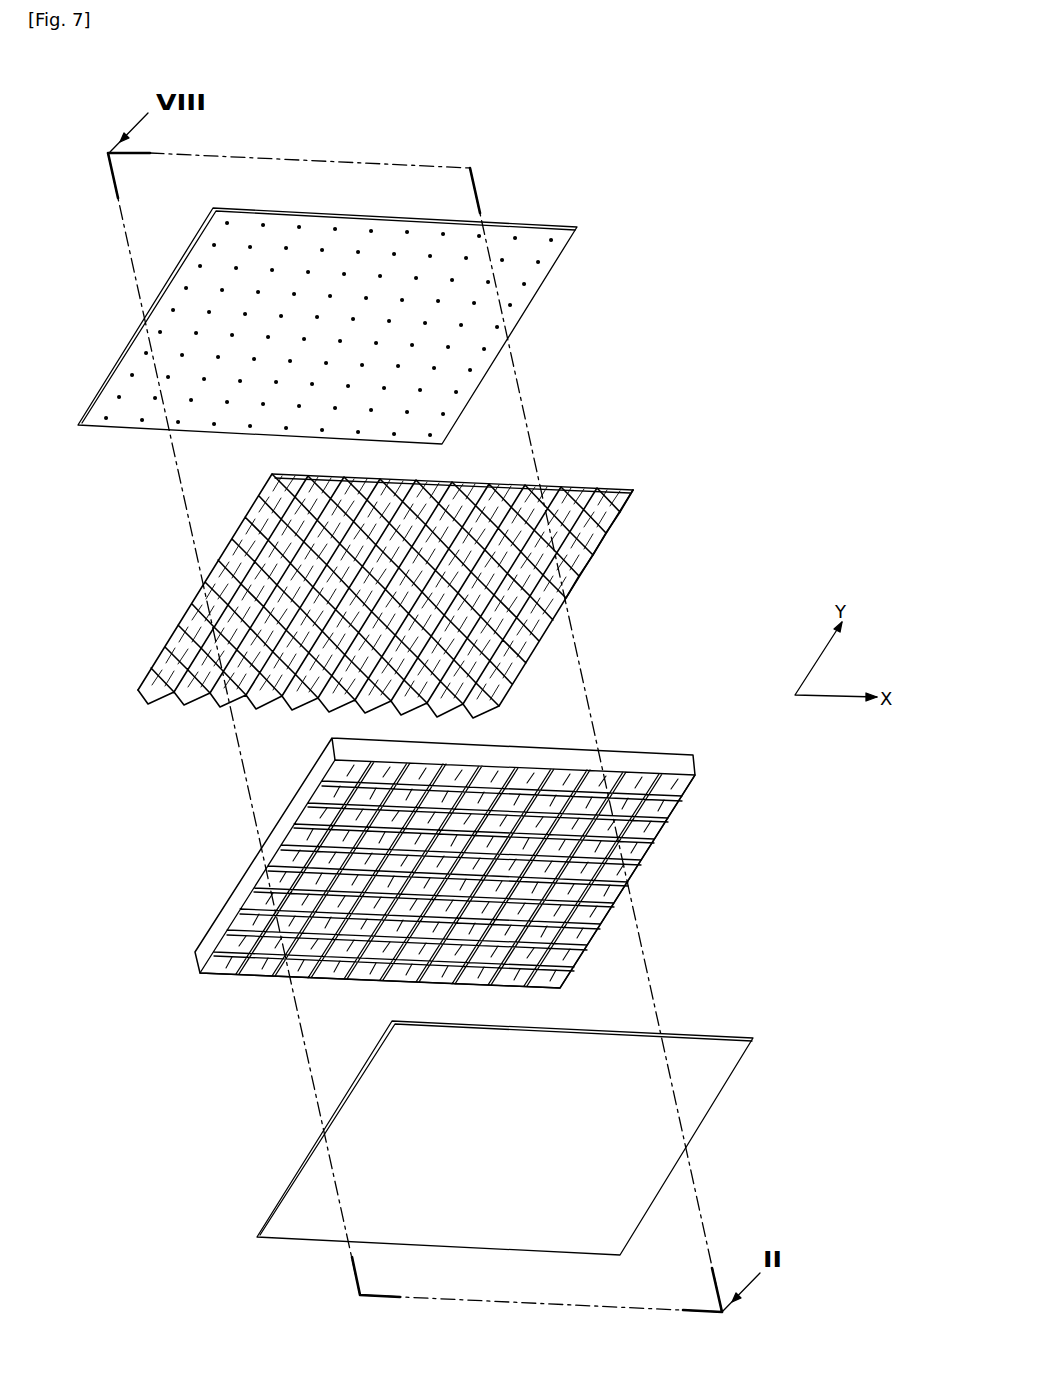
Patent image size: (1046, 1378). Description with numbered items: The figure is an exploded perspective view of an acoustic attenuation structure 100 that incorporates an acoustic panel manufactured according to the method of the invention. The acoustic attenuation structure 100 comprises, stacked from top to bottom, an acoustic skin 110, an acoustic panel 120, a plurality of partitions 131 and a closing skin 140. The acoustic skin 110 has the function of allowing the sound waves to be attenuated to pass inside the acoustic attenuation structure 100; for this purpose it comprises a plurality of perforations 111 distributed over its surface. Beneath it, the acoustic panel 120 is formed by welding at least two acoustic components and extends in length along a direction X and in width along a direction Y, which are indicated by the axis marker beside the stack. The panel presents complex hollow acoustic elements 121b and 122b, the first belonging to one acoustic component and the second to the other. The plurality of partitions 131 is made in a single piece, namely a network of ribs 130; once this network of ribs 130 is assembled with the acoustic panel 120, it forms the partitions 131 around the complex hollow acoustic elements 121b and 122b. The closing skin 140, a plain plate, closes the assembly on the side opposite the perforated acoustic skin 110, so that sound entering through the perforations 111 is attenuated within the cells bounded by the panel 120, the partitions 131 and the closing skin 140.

The acoustic attenuation structure 100 is at (633, 138).
The acoustic skin 110 is at (525, 217).
The perforations 111 is at (510, 305).
The acoustic panel 120 is at (570, 482).
The complex hollow acoustic element 121b is at (223, 702).
The complex hollow acoustic element 122b is at (573, 573).
The network of ribs 130 is at (640, 738).
The partitions 131 is at (628, 848).
The closing skin 140 is at (707, 1030).